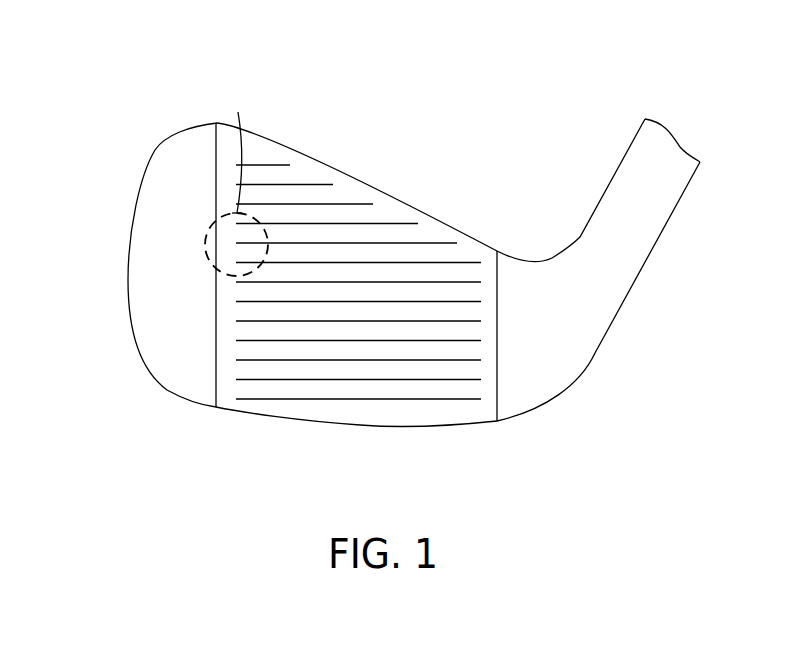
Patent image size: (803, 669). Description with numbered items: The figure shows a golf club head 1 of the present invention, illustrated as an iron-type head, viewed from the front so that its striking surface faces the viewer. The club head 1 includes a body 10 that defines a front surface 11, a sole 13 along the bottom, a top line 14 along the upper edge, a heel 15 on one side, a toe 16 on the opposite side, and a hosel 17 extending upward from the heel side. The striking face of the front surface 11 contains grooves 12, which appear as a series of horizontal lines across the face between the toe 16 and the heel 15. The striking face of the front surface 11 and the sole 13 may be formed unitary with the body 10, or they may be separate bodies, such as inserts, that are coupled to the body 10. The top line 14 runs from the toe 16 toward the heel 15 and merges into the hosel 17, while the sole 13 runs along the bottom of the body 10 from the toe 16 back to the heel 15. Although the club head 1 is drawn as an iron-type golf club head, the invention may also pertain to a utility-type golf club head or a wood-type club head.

The golf club head 1 is at (426, 66).
The body 10 is at (172, 168).
The front surface 11 is at (457, 390).
The grooves 12 is at (458, 262).
The sole 13 is at (322, 423).
The top line 14 is at (322, 164).
The heel 15 is at (626, 337).
The toe 16 is at (104, 268).
The hosel 17 is at (687, 187).